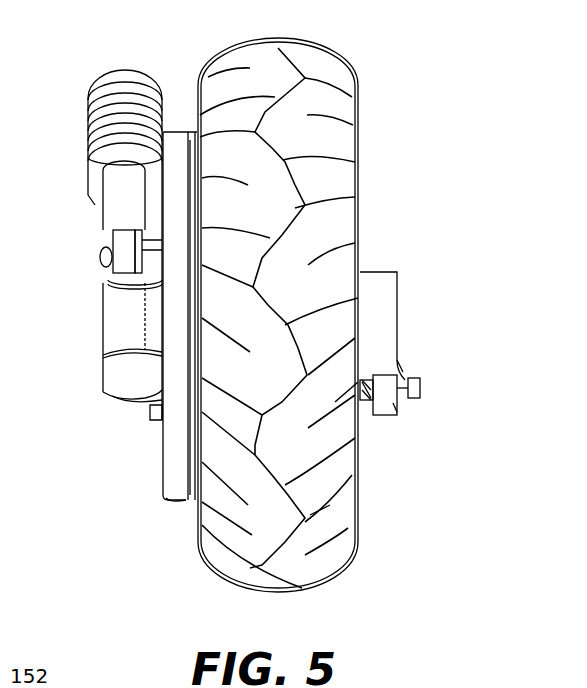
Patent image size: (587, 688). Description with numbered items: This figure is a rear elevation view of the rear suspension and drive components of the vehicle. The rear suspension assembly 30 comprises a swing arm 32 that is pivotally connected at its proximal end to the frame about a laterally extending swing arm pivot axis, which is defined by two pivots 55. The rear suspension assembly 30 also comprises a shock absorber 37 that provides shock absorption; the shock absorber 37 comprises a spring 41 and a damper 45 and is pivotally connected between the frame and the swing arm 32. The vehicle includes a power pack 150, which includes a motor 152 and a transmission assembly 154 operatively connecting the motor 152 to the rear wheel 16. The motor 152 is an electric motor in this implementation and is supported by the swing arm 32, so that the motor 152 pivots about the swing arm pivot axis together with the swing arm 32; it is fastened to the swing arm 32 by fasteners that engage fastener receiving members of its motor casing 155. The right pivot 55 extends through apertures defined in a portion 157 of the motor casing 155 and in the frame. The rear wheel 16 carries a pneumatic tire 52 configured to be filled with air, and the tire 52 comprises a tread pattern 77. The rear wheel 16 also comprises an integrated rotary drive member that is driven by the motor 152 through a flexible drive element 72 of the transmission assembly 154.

The rear wheel 16 is at (362, 178).
The tire 52 is at (318, 62).
The tread pattern 77 is at (330, 505).
The transmission assembly 154 is at (178, 145).
The flexible drive element 72 is at (175, 500).
The spring 41 is at (97, 102).
The shock absorber 37 is at (85, 143).
The damper 45 is at (118, 210).
The rear suspension assembly 30 is at (100, 293).
The swing arm 32 is at (112, 353).
The power pack 150 is at (380, 245).
The motor 152 is at (385, 303).
The motor casing 155 is at (388, 350).
The pivot 55 is at (420, 388).
The portion of the motor casing 157 is at (393, 403).